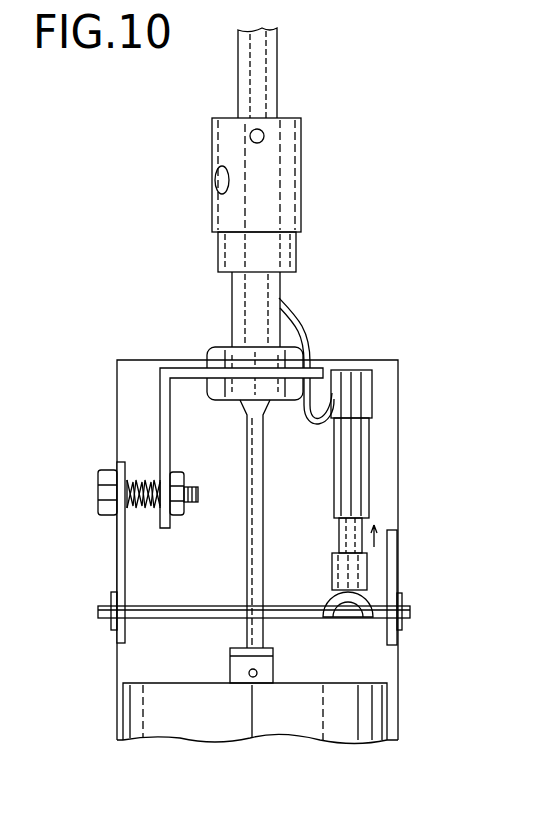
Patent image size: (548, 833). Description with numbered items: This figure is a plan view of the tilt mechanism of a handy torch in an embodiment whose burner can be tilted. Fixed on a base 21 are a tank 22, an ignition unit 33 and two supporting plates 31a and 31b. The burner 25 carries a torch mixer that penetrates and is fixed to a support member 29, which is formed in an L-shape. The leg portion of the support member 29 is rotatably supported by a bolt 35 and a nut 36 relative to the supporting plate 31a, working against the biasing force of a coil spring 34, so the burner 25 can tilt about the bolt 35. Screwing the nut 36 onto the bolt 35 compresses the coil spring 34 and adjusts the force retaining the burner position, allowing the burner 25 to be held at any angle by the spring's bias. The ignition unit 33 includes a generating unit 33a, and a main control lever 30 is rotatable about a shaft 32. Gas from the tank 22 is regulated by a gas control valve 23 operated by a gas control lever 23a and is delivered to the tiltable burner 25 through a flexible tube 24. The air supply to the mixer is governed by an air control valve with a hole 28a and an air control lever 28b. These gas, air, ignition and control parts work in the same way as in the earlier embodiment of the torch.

The base 21 is at (395, 398).
The tank 22 is at (185, 737).
The gas control valve 23 is at (275, 665).
The gas control lever 23a is at (249, 672).
The flexible tube 24 is at (264, 460).
The burner 25 is at (300, 92).
The hole 28a is at (215, 180).
The air control lever 28b is at (264, 136).
The support member 29 is at (173, 372).
The main control lever 30 is at (346, 612).
The supporting plate 31a is at (117, 557).
The supporting plate 31b is at (397, 584).
The shaft 32 is at (184, 606).
The ignition unit 33 is at (378, 480).
The generating unit 33a is at (365, 472).
The coil spring 34 is at (138, 470).
The bolt 35 is at (98, 494).
The nut 36 is at (178, 471).